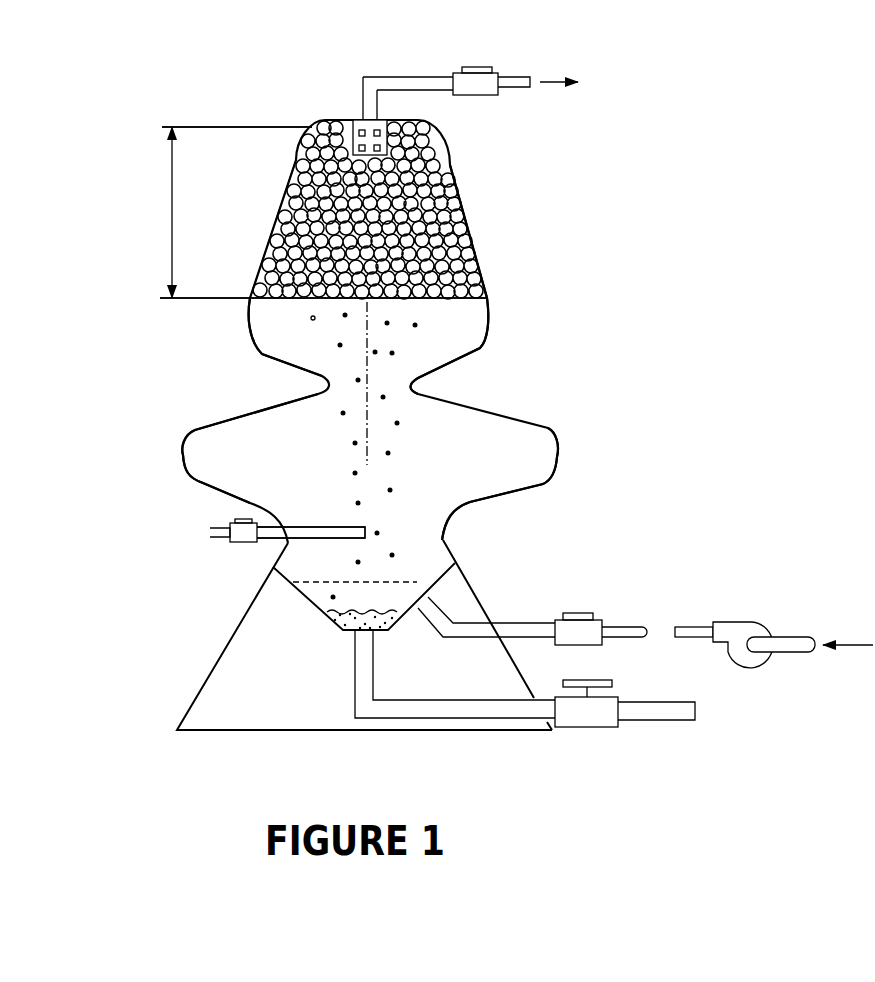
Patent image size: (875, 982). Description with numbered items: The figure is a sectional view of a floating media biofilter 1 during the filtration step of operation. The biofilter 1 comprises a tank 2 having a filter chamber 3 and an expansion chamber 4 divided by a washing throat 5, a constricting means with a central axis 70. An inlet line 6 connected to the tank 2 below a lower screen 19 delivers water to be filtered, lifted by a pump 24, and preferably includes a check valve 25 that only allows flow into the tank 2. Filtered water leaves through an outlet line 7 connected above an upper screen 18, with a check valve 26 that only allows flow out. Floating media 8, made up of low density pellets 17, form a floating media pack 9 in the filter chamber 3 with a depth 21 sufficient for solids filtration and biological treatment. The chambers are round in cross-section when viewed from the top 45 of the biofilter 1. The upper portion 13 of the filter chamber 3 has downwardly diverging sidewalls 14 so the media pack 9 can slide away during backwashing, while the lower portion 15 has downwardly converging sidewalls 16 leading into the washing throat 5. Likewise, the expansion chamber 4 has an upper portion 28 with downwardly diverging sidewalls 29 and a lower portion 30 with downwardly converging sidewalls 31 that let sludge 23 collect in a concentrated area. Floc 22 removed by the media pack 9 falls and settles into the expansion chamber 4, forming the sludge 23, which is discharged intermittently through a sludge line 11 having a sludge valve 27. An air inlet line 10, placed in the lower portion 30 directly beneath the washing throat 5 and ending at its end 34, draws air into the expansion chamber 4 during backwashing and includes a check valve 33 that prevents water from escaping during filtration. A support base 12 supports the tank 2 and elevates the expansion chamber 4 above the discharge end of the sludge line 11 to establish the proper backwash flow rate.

The floating media biofilter 1 is at (547, 219).
The tank 2 is at (503, 325).
The filter chamber 3 is at (487, 275).
The expansion chamber 4 is at (557, 421).
The washing throat 5 is at (384, 388).
The inlet line 6 is at (505, 622).
The outlet line 7 is at (390, 77).
The floating media 8 is at (452, 282).
The floating media pack 9 is at (447, 212).
The air inlet line 10 is at (223, 543).
The sludge line 11 is at (483, 720).
The support base 12 is at (222, 653).
The upper portion 13 is at (236, 212).
The downwardly diverging sidewalls 14 is at (285, 243).
The lower portion 15 is at (243, 333).
The downwardly converging sidewalls 16 is at (266, 351).
The pellets 17 is at (424, 300).
The upper screen 18 is at (318, 130).
The lower screen 19 is at (427, 578).
The depth 21 is at (172, 206).
The floc 22 is at (310, 318).
The sludge 23 is at (343, 632).
The pump 24 is at (743, 622).
The check valve 25 is at (578, 614).
The check valve 26 is at (475, 68).
The sludge valve 27 is at (578, 728).
The upper portion 28 is at (207, 408).
The downwardly diverging sidewalls 29 is at (255, 403).
The lower portion 30 is at (205, 489).
The downwardly converging sidewalls 31 is at (240, 498).
The check valve 33 is at (243, 543).
The end 34 is at (465, 503).
The top 45 is at (348, 119).
The central axis 70 is at (365, 433).